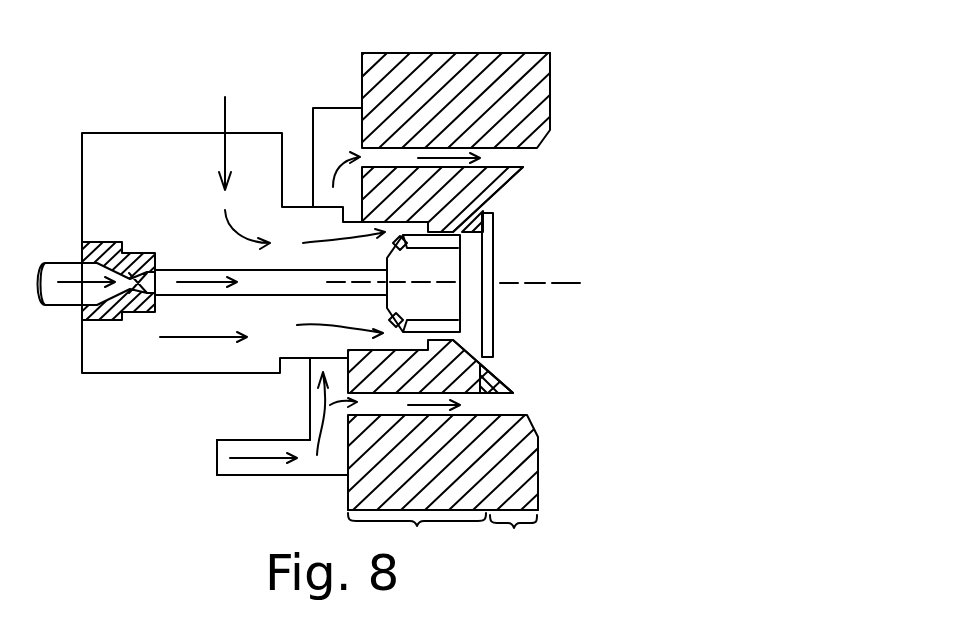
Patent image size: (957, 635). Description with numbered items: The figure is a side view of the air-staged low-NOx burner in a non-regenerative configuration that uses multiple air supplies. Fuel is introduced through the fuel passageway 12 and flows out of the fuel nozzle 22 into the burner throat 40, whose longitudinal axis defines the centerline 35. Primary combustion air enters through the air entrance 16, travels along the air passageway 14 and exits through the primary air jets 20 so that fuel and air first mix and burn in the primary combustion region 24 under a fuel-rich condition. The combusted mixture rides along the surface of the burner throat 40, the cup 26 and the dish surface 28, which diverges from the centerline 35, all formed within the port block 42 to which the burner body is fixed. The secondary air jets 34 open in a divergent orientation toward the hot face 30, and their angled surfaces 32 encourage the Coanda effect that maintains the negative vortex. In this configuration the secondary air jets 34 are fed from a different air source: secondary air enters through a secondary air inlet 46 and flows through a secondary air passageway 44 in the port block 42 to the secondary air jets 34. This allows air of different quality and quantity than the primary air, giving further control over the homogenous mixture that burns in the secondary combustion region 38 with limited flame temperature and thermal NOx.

The fuel passageway 12 is at (62, 295).
The air passageway 14 is at (257, 150).
The air entrance 16 is at (180, 132).
The primary air jets 20 is at (405, 250).
The fuel nozzle 22 is at (385, 312).
The primary combustion region 24 is at (417, 536).
The cup 26 is at (493, 252).
The dish surface 28 is at (513, 187).
The hot face 30 is at (552, 62).
The tapered surface 32 is at (493, 247).
The secondary air jets 34 is at (530, 157).
The centerline 35 is at (360, 266).
The secondary combustion region 38 is at (516, 539).
The burner throat 40 is at (493, 288).
The port block 42 is at (470, 90).
The secondary air passageway 44 is at (280, 483).
The secondary air inlet 46 is at (217, 452).